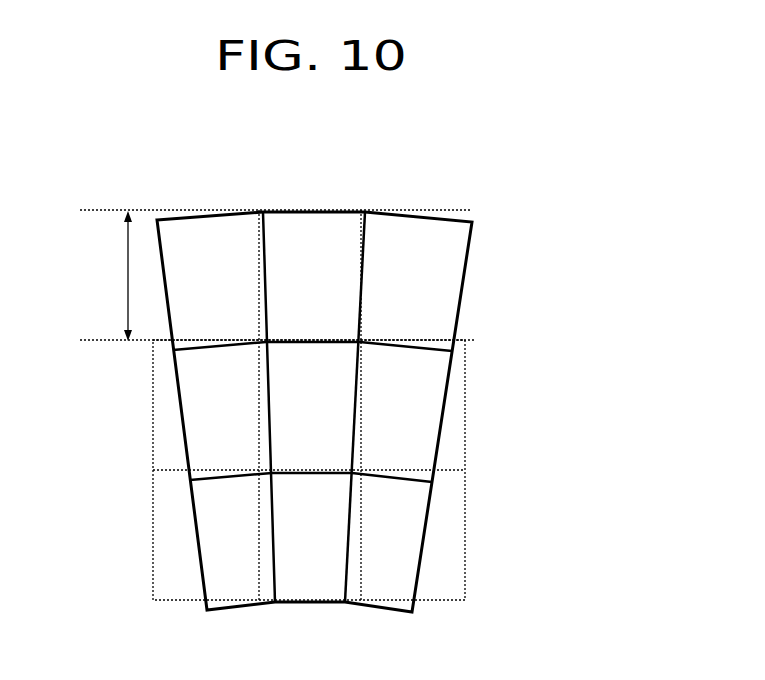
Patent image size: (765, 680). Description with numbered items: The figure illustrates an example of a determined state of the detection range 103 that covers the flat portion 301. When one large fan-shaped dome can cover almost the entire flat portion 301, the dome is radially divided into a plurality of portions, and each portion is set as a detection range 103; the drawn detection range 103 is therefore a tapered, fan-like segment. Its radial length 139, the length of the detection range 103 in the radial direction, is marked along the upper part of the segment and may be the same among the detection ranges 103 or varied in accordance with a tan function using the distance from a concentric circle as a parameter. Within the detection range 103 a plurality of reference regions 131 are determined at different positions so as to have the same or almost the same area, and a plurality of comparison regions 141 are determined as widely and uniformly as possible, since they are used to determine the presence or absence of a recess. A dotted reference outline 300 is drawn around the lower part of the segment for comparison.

The detection range 103 is at (178, 385).
The reference region 131 is at (233, 253).
The radial length 139 is at (128, 272).
The comparison region 141 is at (187, 257).
The virtual rectangular region 300 is at (152, 492).
The flat portion 301 is at (455, 483).